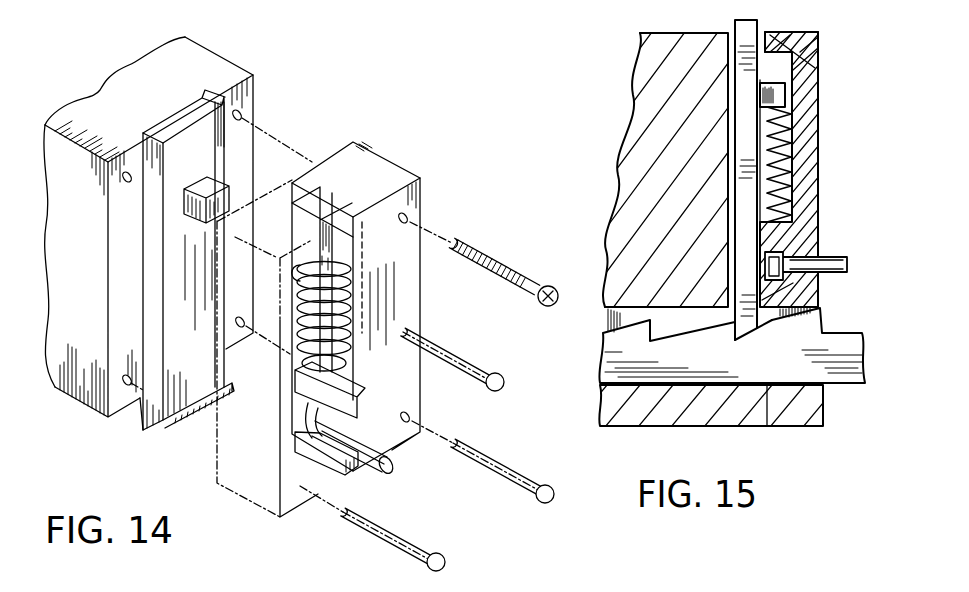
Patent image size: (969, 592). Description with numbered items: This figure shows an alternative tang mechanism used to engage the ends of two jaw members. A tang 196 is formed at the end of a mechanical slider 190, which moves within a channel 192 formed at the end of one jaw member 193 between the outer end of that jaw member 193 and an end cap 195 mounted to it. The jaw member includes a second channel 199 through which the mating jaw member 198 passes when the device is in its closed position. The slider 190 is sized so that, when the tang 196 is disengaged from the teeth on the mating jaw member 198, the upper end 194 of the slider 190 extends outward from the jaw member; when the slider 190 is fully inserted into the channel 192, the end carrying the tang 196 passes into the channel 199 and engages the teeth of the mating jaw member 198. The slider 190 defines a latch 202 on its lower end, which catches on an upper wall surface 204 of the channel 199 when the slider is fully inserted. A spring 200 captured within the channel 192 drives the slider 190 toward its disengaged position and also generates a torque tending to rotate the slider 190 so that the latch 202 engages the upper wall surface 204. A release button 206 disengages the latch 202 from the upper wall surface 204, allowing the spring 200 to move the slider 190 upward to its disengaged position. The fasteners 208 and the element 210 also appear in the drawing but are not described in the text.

In FIG. 14, the mechanical slider 190 is at (225, 148).
In FIG. 15, the mechanical slider 190 is at (742, 142).
In FIG. 15, the channel 192 is at (828, 43).
In FIG. 14, the jaw member 193 is at (85, 102).
In FIG. 15, the jaw member 193 is at (647, 48).
In FIG. 14, the upper end 194 is at (182, 120).
In FIG. 15, the upper end 194 is at (757, 17).
In FIG. 14, the end cap 195 is at (390, 162).
In FIG. 15, the end cap 195 is at (815, 97).
In FIG. 14, the tang 196 is at (140, 433).
In FIG. 15, the tang 196 is at (736, 334).
In FIG. 15, the mating jaw member 198 is at (845, 333).
In FIG. 15, the channel 199 is at (626, 306).
In FIG. 14, the spring 200 is at (336, 254).
In FIG. 15, the spring 200 is at (795, 150).
In FIG. 14, the latch 202 is at (163, 430).
In FIG. 15, the latch 202 is at (768, 334).
In FIG. 14, the upper wall surface 204 is at (295, 440).
In FIG. 15, the upper wall surface 204 is at (766, 290).
In FIG. 14, the release button 206 is at (394, 470).
In FIG. 15, the release button 206 is at (837, 253).
In FIG. 14, the fasteners 208 is at (449, 404).
In FIG. 14, the base 210 is at (207, 576).